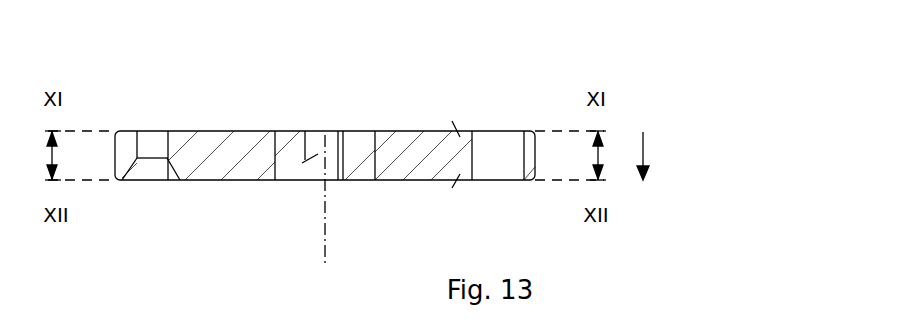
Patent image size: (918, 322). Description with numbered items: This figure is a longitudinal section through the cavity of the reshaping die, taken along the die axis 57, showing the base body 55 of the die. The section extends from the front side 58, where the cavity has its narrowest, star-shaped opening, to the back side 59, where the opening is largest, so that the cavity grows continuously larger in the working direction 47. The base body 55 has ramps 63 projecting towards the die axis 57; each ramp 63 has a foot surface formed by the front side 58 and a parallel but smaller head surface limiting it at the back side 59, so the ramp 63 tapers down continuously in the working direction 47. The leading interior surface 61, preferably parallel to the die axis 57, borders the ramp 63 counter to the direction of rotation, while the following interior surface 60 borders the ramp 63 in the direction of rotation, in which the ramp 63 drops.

The working direction 47 is at (645, 150).
The base body 55 is at (357, 180).
The die axis 57 is at (325, 245).
The front side 58 is at (455, 132).
The back side 59 is at (455, 178).
The following interior surface 60 is at (355, 147).
The leading interior surface 61 is at (324, 143).
The ramp 63 is at (297, 152).